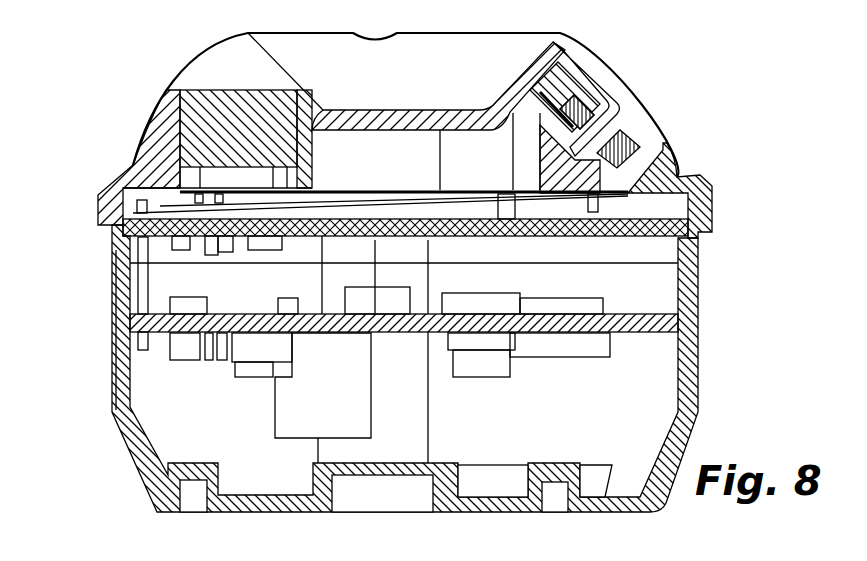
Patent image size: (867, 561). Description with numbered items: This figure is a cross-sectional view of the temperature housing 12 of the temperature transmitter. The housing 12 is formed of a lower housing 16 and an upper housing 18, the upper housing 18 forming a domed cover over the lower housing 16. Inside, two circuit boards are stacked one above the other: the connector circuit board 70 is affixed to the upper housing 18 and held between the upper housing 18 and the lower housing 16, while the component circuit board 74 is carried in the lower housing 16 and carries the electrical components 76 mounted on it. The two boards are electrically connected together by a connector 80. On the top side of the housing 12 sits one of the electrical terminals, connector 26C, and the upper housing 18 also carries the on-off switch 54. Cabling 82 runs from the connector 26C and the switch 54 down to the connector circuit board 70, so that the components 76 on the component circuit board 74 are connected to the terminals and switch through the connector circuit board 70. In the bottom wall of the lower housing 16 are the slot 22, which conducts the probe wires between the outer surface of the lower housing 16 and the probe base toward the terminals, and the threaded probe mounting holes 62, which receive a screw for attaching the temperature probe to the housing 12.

The temperature housing 12 is at (122, 76).
The lower housing 16 is at (127, 452).
The upper housing 18 is at (125, 157).
The slot 22 is at (398, 507).
The electrical connector 26C is at (603, 70).
The on-off switch 54 is at (198, 103).
The threaded probe mounting holes 62 is at (193, 500).
The connector circuit board 70 is at (700, 236).
The component circuit board 74 is at (628, 325).
The electrical components 76 is at (272, 359).
The connector 80 is at (143, 287).
The cabling 82 is at (332, 190).